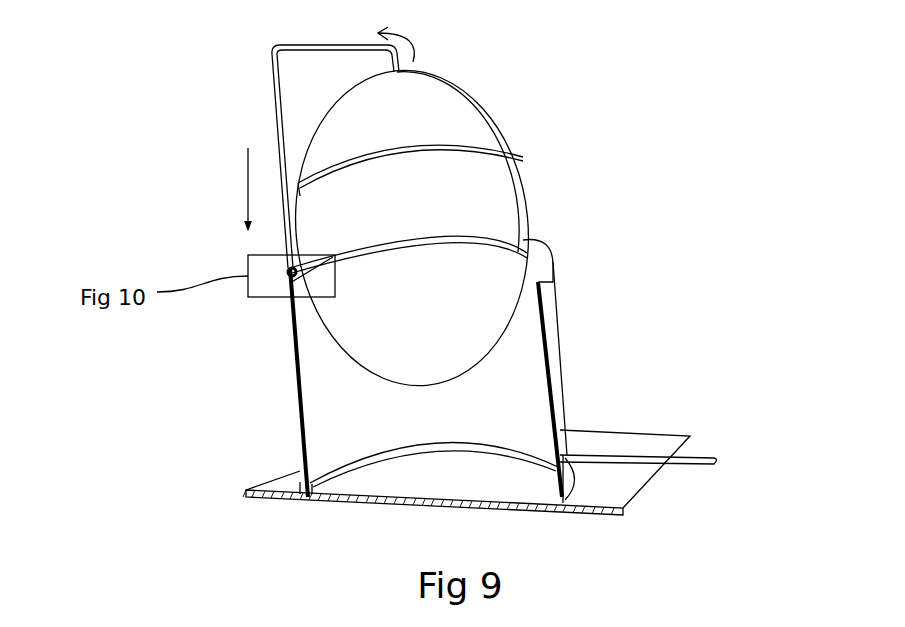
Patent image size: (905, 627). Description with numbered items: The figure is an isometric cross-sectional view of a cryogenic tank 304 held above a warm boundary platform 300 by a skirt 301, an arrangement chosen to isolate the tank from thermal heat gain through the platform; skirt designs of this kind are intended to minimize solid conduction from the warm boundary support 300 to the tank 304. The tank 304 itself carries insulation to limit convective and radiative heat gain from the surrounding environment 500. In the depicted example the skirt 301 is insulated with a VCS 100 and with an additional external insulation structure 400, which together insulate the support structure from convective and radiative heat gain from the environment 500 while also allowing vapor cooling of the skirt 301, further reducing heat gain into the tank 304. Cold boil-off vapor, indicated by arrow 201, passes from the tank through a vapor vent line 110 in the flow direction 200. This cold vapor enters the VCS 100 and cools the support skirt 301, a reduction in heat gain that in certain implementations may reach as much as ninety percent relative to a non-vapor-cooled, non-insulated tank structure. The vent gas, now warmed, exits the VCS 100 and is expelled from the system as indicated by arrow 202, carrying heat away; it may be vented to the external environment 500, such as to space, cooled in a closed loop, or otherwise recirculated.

The VCS 100 is at (578, 322).
The vapor vent line 110 is at (278, 132).
The flow direction 200 is at (222, 189).
The arrow indicating cold boil-off vapor 201 is at (415, 40).
The arrow indicating expelled vent gas 202 is at (728, 461).
The warm boundary platform 300 is at (645, 442).
The skirt 301 is at (293, 405).
The cryogenic tank 304 is at (525, 157).
The external insulation structure 400 is at (500, 93).
The surrounding environment 500 is at (128, 175).